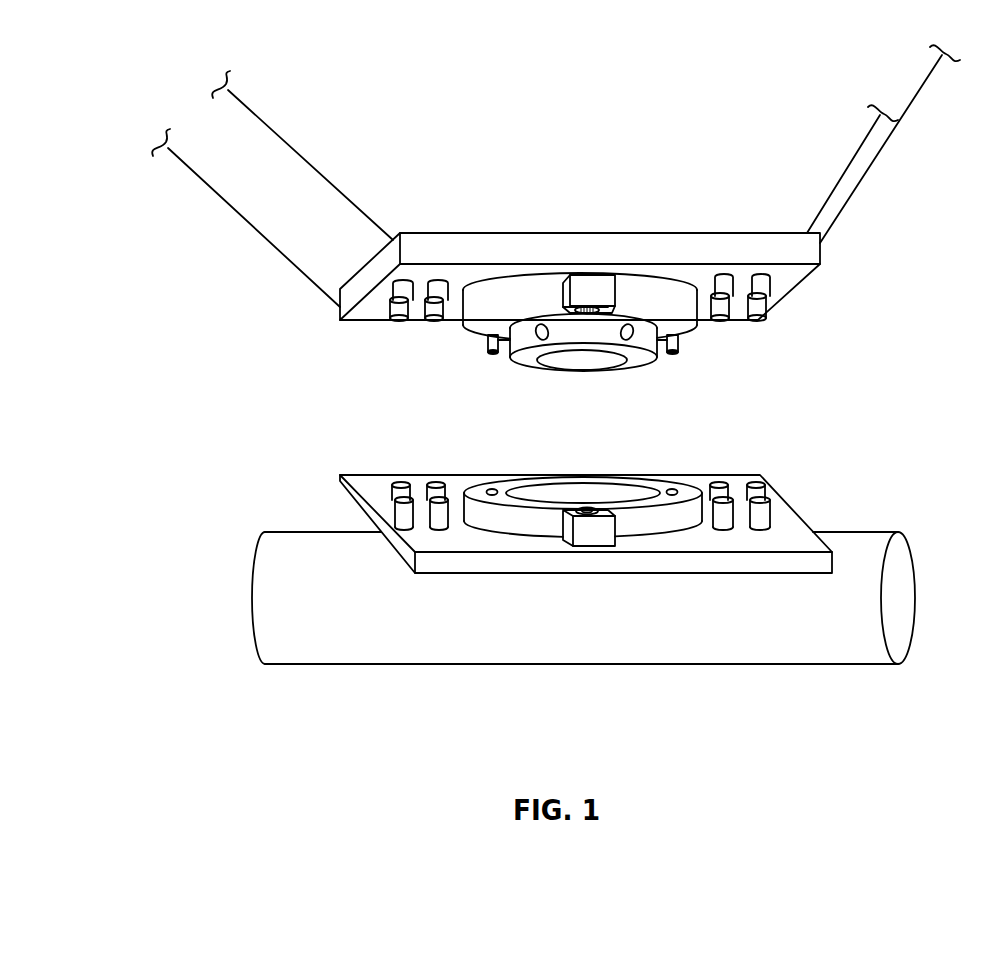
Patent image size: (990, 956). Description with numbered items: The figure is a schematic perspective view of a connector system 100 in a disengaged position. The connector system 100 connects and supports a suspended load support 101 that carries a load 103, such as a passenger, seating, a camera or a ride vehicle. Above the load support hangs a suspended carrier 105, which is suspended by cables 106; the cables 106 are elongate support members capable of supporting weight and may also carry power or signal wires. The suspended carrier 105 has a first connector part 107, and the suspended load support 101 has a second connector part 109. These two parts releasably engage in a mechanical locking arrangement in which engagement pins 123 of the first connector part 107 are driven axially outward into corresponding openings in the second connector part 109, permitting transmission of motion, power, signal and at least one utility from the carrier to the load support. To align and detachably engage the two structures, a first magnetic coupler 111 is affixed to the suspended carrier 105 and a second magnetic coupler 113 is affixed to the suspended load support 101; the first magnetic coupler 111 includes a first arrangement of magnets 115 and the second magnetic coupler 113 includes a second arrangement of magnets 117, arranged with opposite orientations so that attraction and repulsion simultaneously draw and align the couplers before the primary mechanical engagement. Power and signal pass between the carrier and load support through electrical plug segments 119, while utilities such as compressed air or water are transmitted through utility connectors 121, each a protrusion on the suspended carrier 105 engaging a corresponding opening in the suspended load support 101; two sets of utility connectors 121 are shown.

The connector system 100 is at (186, 350).
The suspended load support 101 is at (780, 515).
The load 103 is at (900, 603).
The suspended carrier 105 is at (803, 252).
The cables 106 is at (202, 180).
The first connector part 107 is at (632, 364).
The second connector part 109 is at (542, 481).
The first magnetic coupler 111 is at (390, 313).
The second magnetic coupler 113 is at (393, 494).
The first arrangement of magnets 115 is at (411, 343).
The second arrangement of magnets 117 is at (414, 459).
The electrical plug segments 119 is at (600, 292).
The utility connector 121 is at (489, 355).
The engagement pins 123 is at (537, 335).